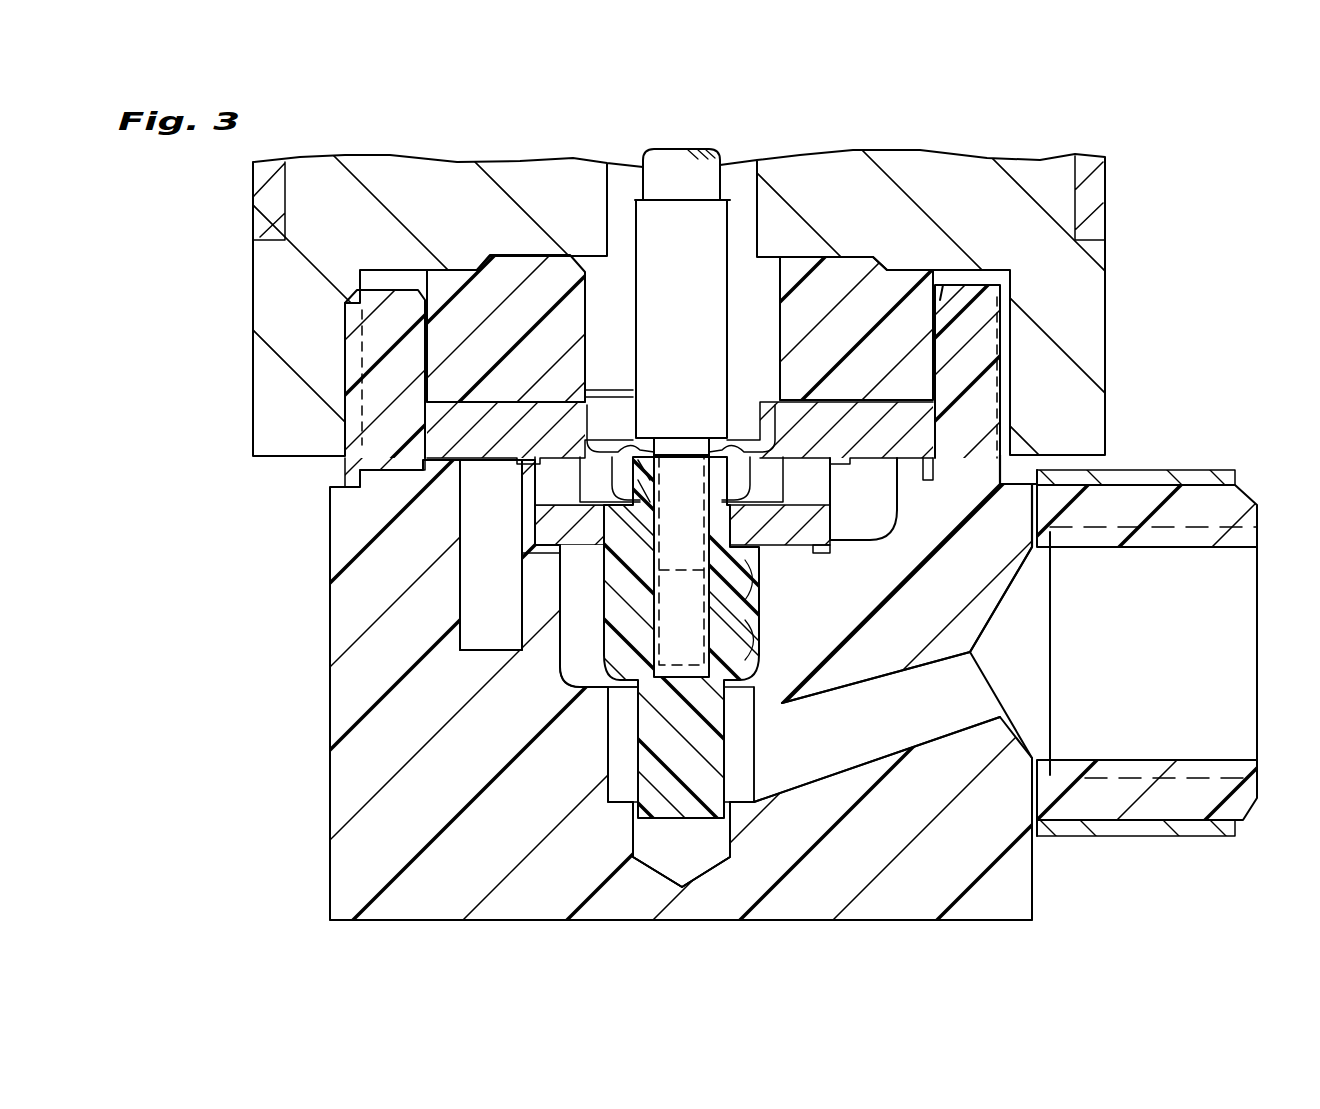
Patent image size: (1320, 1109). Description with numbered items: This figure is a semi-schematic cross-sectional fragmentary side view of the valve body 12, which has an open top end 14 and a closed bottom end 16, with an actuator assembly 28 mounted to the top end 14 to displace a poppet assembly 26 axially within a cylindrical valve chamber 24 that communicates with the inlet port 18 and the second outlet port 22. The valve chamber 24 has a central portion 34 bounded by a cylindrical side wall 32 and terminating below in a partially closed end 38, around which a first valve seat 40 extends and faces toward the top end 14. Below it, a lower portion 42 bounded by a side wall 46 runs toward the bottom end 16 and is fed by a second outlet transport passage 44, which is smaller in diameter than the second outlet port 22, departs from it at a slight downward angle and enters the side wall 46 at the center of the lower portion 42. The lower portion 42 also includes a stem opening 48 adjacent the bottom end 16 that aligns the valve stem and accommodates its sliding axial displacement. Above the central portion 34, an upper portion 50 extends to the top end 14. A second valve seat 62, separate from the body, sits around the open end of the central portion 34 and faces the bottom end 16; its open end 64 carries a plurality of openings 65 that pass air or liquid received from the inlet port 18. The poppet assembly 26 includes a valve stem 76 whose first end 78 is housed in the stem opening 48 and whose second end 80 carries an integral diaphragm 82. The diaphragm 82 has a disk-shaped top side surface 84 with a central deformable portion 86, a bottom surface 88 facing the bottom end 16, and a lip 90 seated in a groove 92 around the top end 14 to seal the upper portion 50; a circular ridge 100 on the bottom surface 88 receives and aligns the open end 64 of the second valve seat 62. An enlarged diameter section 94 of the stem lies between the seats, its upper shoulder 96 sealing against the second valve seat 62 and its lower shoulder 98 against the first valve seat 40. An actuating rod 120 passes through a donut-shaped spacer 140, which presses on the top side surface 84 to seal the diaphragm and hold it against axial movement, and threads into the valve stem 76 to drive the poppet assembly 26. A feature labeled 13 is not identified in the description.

The valve body 12 is at (854, 846).
The body side wall 13 is at (328, 808).
The open top end 14 is at (452, 454).
The closed bottom end 16 is at (826, 921).
The inlet port 18 is at (745, 630).
The second outlet port 22 is at (1235, 665).
The cylindrical valve chamber 24 is at (772, 578).
The poppet assembly 26 is at (764, 652).
The actuator assembly 28 is at (1112, 280).
The side wall 32 is at (793, 604).
The central portion 34 is at (565, 646).
The partially closed end 38 is at (876, 688).
The first valve seat 40 is at (608, 700).
The lower portion 42 is at (618, 748).
The second outlet transport passage 44 is at (858, 727).
The side wall 46 is at (745, 775).
The stem opening 48 is at (665, 862).
The upper portion 50 is at (848, 503).
The second valve seat 62 is at (828, 530).
The open end 64 is at (806, 408).
The openings 65 is at (625, 462).
The valve stem 76 is at (668, 748).
The first end 78 is at (695, 825).
The second end 80 is at (650, 438).
The diaphragm 82 is at (545, 441).
The top side surface 84 is at (495, 395).
The deformable portion 86 is at (745, 458).
The bottom surface 88 is at (890, 488).
The lip 90 is at (930, 478).
The groove 92 is at (420, 472).
The enlarged diameter section 94 is at (622, 636).
The upper shoulder 96 is at (600, 566).
The lower shoulder 98 is at (762, 700).
The circular ridge 100 is at (843, 462).
The actuating rod 120 is at (661, 298).
The donut-shaped spacer 140 is at (802, 308).